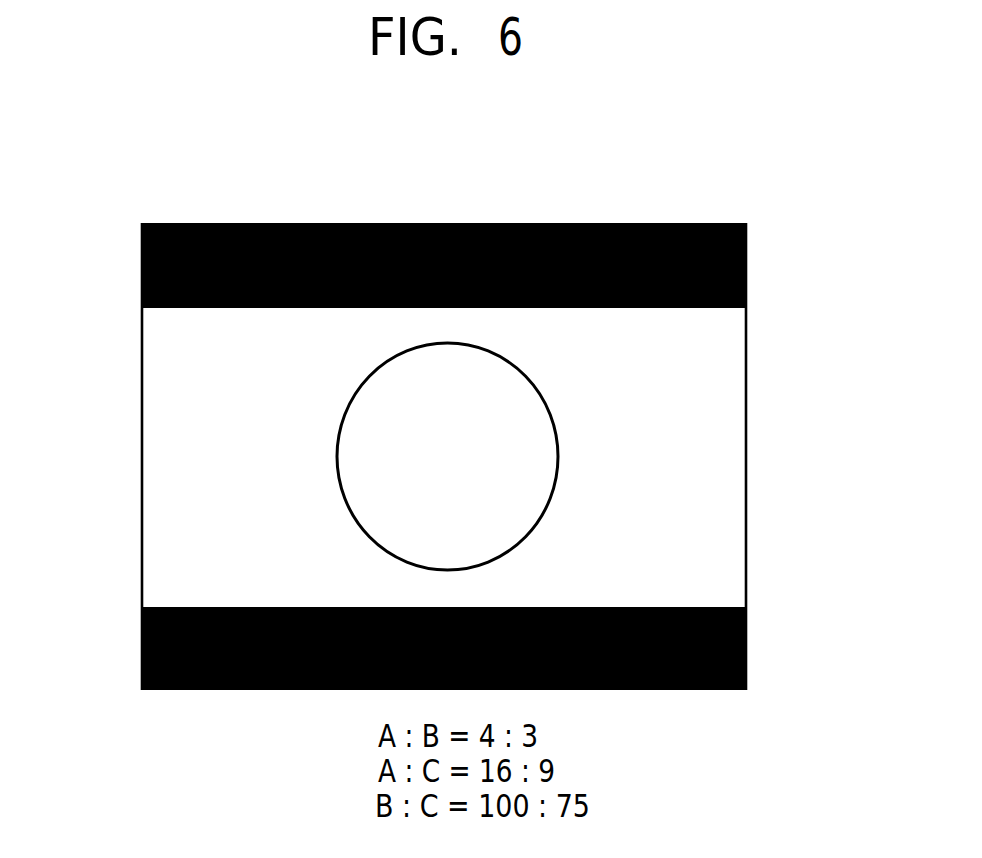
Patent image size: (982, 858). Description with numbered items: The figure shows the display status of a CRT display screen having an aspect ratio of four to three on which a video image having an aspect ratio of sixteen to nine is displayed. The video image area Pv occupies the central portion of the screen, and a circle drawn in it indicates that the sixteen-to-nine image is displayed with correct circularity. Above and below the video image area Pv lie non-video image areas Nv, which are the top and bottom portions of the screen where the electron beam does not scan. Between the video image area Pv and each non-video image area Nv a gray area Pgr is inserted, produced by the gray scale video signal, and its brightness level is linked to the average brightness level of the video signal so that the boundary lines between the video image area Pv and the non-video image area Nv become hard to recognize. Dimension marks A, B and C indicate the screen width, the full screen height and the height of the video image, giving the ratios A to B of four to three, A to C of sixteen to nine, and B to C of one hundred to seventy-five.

The non-video image area Nv is at (746, 241).
The gray area Pgr is at (746, 294).
The video image area Pv is at (722, 424).
The panel width A is at (746, 218).
The panel full height B is at (138, 223).
The display area height C is at (137, 283).